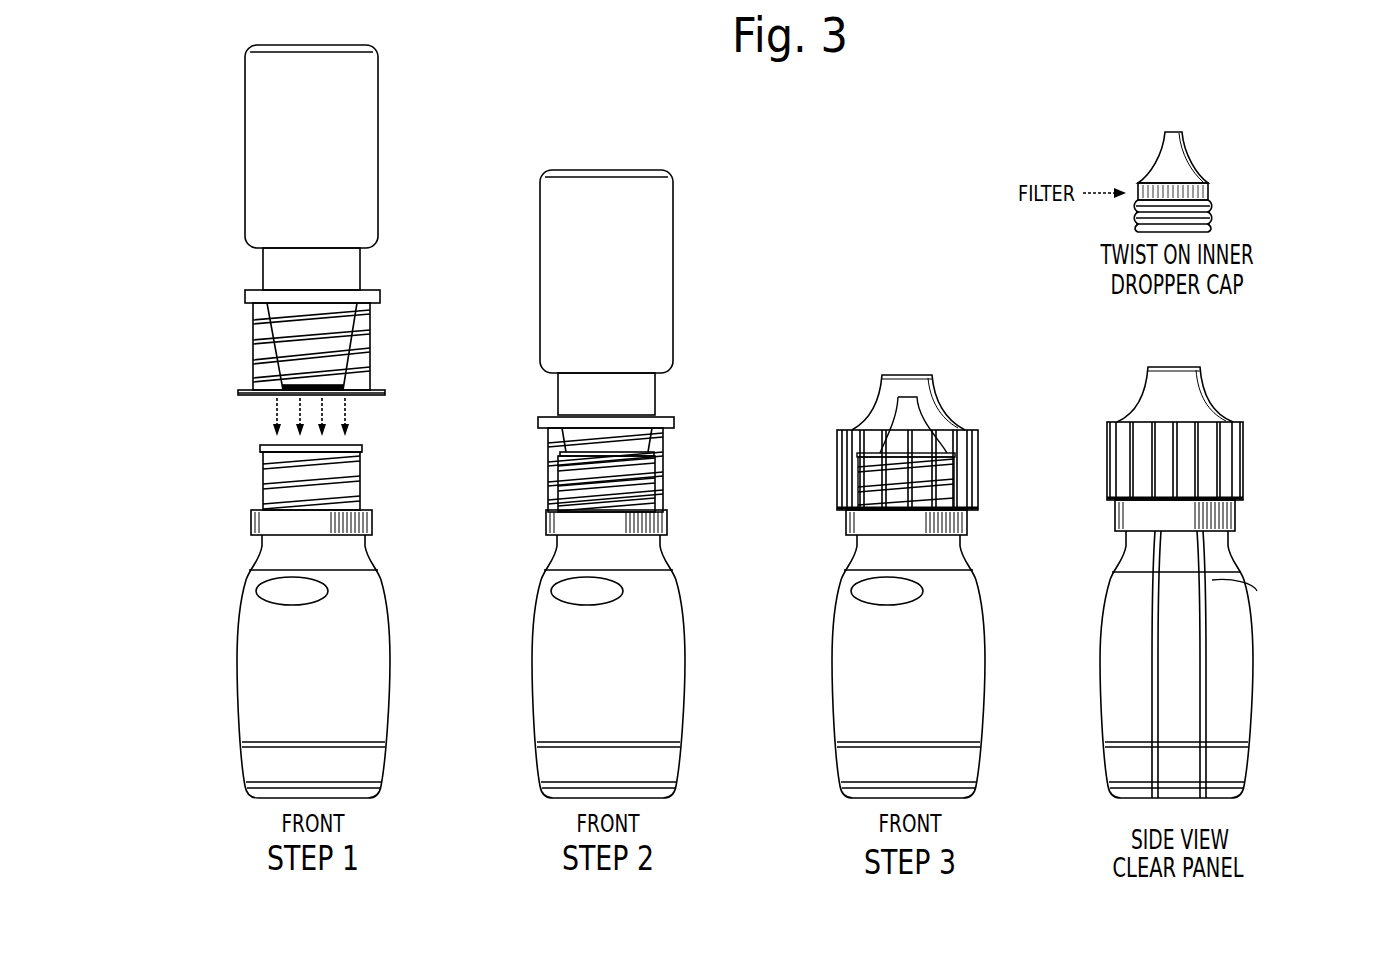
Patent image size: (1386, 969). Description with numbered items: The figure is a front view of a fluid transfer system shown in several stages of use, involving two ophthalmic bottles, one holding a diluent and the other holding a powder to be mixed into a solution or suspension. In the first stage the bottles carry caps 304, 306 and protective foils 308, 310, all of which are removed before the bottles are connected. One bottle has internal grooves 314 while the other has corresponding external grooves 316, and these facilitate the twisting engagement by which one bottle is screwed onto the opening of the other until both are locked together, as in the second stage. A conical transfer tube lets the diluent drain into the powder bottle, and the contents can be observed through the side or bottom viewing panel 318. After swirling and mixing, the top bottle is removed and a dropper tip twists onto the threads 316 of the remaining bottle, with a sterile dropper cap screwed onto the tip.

The cap 304 is at (245, 398).
The cap 306 is at (268, 440).
The protective foil 308 is at (385, 393).
The protective foil 310 is at (363, 448).
The internal grooves 314 is at (253, 340).
The external grooves 316 is at (263, 483).
The viewing panel 318 is at (1177, 784).